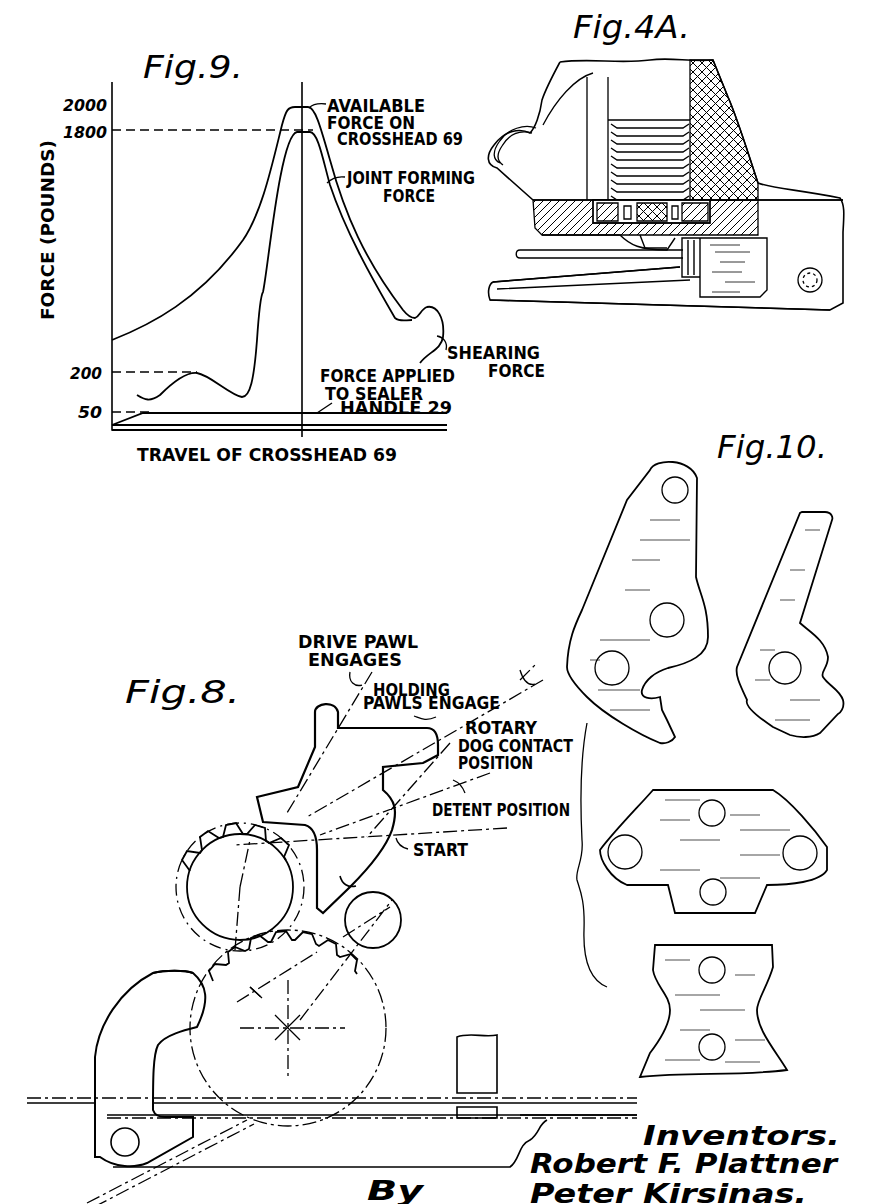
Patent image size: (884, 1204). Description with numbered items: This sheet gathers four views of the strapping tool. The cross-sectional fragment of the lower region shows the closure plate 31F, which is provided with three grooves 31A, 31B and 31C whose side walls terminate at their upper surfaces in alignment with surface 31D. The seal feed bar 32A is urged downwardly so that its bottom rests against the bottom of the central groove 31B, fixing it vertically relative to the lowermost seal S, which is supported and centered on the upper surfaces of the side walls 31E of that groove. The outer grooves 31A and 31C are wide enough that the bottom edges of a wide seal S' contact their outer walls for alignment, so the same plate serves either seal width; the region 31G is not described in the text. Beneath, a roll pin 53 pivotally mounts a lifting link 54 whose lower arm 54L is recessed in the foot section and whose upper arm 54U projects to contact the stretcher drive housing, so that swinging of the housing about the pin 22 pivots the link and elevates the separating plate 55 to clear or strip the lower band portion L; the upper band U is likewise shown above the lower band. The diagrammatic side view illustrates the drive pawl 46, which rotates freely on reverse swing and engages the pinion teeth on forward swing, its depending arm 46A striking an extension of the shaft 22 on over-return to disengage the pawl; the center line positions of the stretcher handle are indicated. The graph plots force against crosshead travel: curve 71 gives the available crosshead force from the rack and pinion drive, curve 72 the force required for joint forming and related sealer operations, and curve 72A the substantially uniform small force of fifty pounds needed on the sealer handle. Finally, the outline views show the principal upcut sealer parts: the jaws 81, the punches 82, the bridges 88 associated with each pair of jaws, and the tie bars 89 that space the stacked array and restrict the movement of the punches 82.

In FIG. 9, the curve 71 is at (221, 277).
In FIG. 9, the curve 72 is at (263, 292).
In FIG. 9, the curve 72A is at (260, 413).
In FIG. 4A, the seal S is at (687, 130).
In FIG. 4A, the wide seal S' is at (782, 178).
In FIG. 4A, the seal feed bar 32A is at (653, 202).
In FIG. 4A, the groove 31A is at (617, 203).
In FIG. 4A, the groove 31B is at (643, 213).
In FIG. 4A, the groove 31C is at (680, 224).
In FIG. 4A, the surface 31D is at (553, 200).
In FIG. 4A, the side walls 31E is at (684, 210).
In FIG. 4A, the closure plate 31F is at (565, 218).
In FIG. 4A, the die center 31G is at (648, 235).
In FIG. 8, the drive pawl 46 is at (347, 808).
In FIG. 8, the depending arm 46A is at (350, 885).
In FIG. 8, the pin 22 is at (393, 934).
In FIG. 8, the lifting link 54 is at (95, 1066).
In FIG. 8, the upper arm 54U is at (168, 997).
In FIG. 8, the lower arm 54L is at (163, 1133).
In FIG. 8, the roll pin 53 is at (110, 1141).
In FIG. 8, the separating plate 55 is at (350, 1108).
In FIG. 8, the upper strap U is at (505, 1104).
In FIG. 8, the lower band portion L is at (566, 1120).
In FIG. 10, the jaws 81 is at (615, 715).
In FIG. 10, the punches 82 is at (837, 727).
In FIG. 10, the tie bars 89 is at (672, 898).
In FIG. 10, the bridges 88 is at (755, 1050).